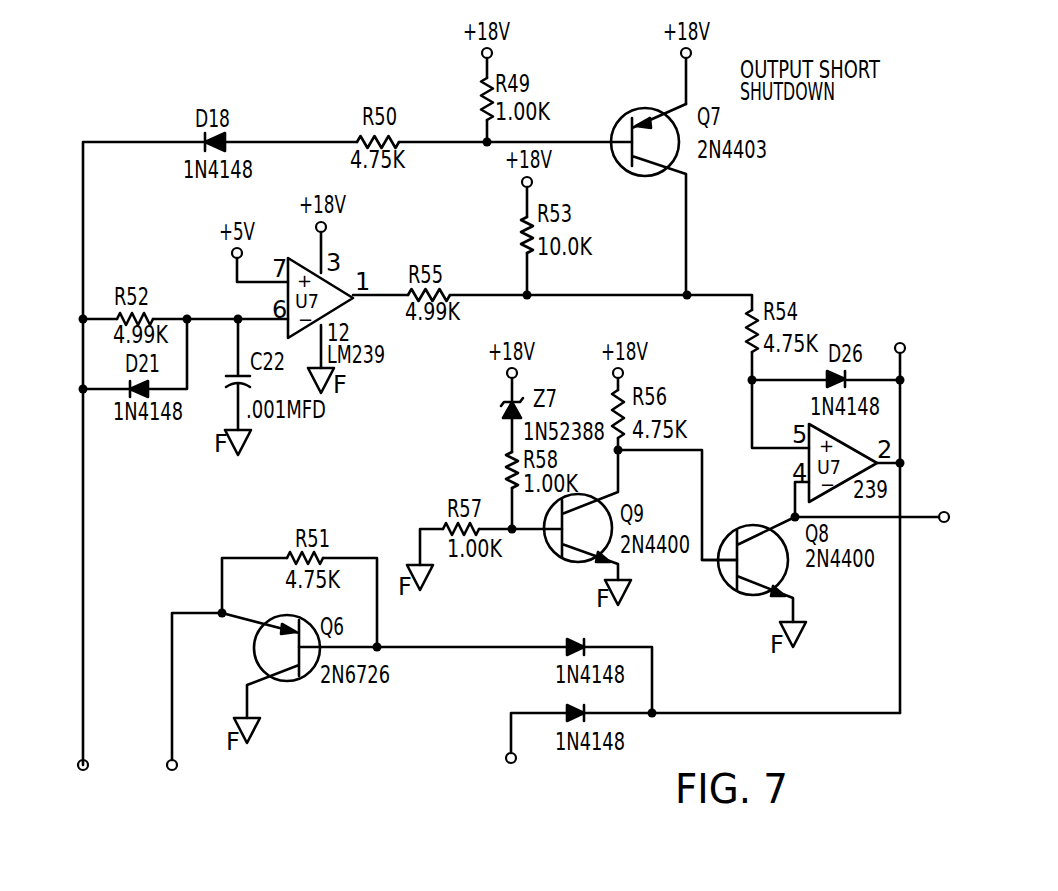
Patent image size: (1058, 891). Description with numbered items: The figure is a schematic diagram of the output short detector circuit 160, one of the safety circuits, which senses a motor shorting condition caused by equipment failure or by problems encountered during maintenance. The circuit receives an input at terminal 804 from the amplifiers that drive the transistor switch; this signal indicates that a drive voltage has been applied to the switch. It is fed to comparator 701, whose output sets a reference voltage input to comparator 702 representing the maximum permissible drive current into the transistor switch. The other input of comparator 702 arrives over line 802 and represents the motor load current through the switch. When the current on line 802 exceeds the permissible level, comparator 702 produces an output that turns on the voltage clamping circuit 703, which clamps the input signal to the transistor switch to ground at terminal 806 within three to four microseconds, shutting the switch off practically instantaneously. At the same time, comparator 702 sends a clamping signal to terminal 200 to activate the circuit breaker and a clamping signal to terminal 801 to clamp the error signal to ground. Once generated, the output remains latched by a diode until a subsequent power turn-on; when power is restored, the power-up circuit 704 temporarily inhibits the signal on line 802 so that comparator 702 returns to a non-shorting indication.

The output short detector circuit 160 is at (750, 257).
The terminal 200 is at (897, 342).
The comparator 701 is at (338, 283).
The comparator 702 is at (855, 445).
The voltage clamping circuit 703 is at (290, 683).
The power-up circuit 704 is at (680, 565).
The terminal 801 is at (516, 763).
The line 802 is at (912, 515).
The terminal 804 is at (87, 770).
The terminal 806 is at (178, 768).